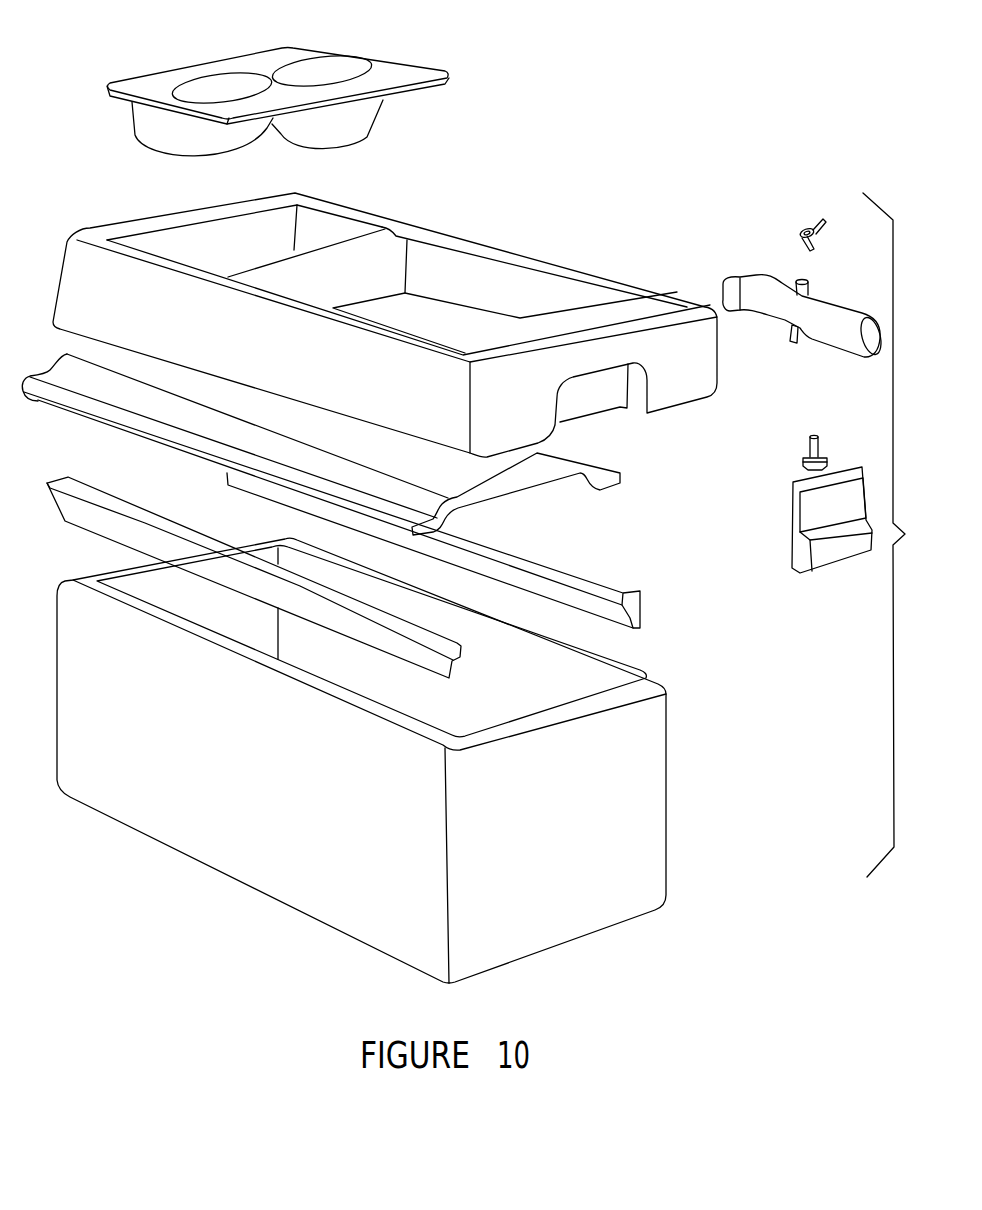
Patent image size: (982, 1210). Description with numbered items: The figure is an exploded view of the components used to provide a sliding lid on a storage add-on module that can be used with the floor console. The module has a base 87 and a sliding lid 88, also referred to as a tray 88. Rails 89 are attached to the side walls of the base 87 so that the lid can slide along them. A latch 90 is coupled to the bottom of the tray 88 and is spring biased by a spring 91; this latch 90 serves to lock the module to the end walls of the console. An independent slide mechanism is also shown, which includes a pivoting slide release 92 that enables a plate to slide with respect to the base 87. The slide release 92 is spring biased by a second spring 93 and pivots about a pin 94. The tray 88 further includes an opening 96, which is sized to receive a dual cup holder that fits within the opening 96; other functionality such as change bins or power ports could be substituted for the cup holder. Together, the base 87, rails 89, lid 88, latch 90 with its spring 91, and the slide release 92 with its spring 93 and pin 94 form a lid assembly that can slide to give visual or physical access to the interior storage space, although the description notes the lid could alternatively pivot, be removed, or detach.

The base 87 is at (520, 822).
The sliding lid 88 is at (505, 290).
The rails 89 is at (603, 577).
The latch 90 is at (403, 67).
The spring 91 is at (807, 447).
The pivoting slide release 92 is at (827, 297).
The spring 93 is at (798, 224).
The pin 94 is at (793, 300).
The opening 96 is at (237, 244).